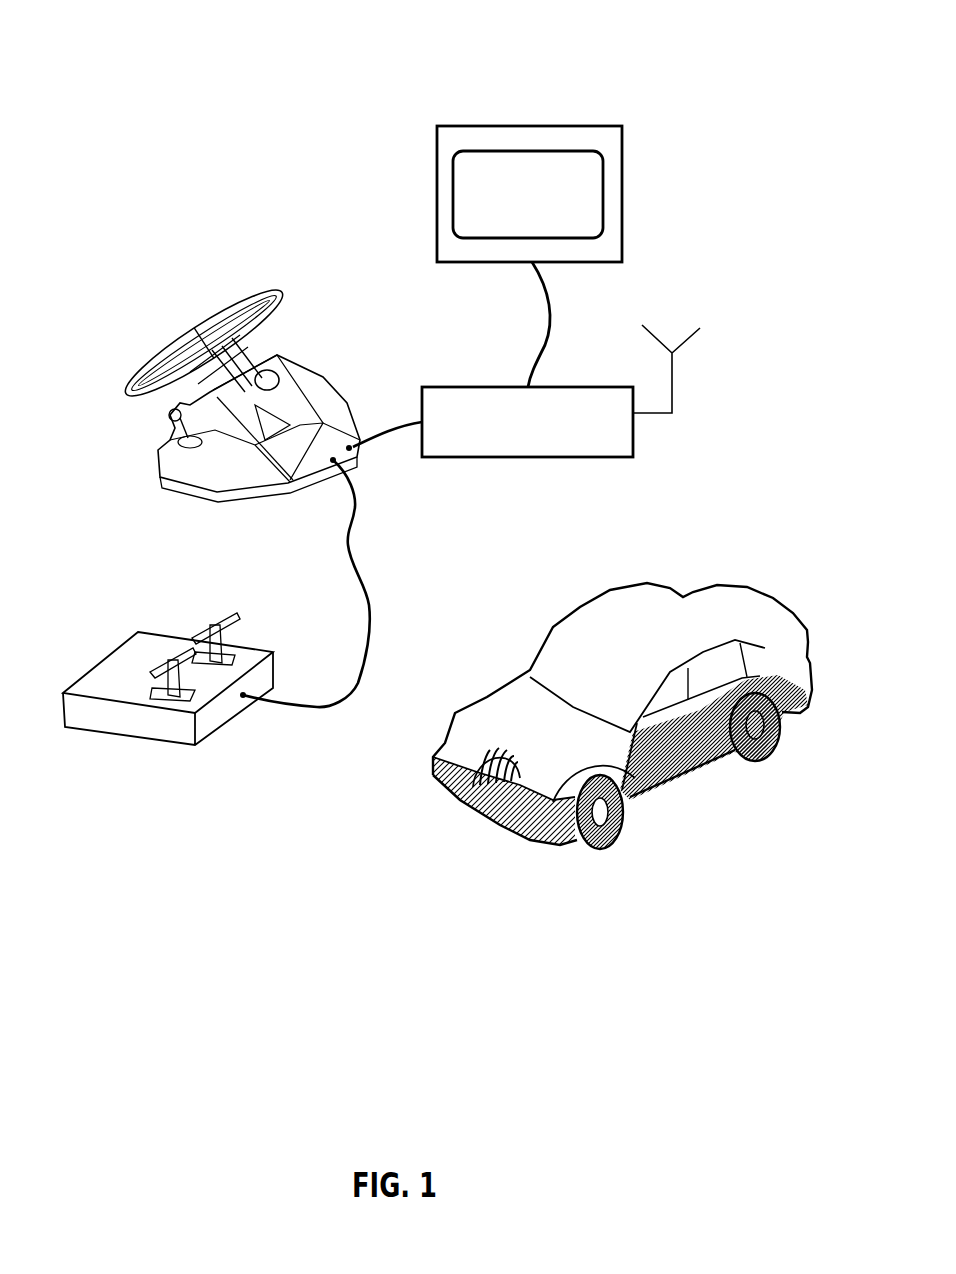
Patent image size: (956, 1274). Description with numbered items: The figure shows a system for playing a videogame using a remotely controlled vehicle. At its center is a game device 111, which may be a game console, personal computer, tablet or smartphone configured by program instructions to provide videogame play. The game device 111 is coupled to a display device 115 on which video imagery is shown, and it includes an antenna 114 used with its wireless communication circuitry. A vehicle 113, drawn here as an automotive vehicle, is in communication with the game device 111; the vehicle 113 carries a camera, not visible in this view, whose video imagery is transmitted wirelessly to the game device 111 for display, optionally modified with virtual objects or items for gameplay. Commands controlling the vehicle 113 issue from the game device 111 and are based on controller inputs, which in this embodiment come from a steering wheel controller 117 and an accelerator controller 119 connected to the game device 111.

The game device 111 is at (542, 487).
The vehicle 113 is at (673, 770).
The antenna 114 is at (672, 388).
The display device 115 is at (507, 102).
The steering wheel controller 117 is at (162, 355).
The accelerator controller 119 is at (178, 657).